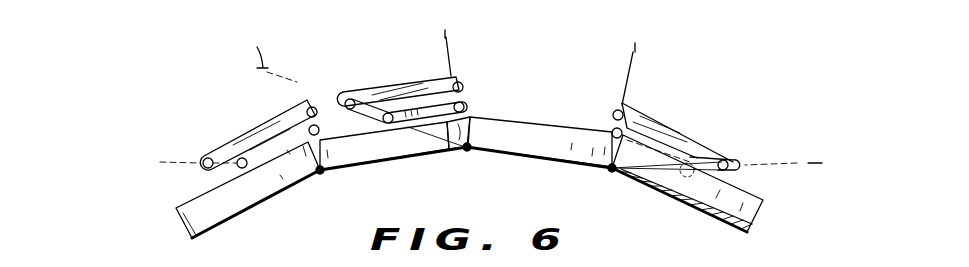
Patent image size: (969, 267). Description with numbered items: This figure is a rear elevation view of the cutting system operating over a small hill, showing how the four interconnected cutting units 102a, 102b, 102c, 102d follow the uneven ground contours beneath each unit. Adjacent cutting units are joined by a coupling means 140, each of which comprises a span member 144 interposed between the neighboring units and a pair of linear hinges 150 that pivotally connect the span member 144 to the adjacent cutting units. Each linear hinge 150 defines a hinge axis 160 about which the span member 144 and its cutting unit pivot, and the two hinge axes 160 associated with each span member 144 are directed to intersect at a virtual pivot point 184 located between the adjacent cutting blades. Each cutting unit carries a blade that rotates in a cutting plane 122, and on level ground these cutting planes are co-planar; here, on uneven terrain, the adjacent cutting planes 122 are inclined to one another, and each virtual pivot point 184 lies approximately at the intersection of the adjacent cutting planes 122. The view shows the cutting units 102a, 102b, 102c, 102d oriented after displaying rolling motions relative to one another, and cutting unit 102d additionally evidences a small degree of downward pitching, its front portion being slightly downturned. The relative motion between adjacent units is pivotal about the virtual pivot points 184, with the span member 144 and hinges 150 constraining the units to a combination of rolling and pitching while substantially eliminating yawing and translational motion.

The left side cutting unit 102a is at (203, 210).
The cutting unit 102b is at (362, 153).
The right middle cutting unit 102c is at (503, 122).
The cutting unit 102d is at (760, 213).
The cutting plane 122 is at (187, 240).
The coupling means 140 is at (418, 72).
The span member 144 is at (257, 133).
The linear hinge 150 is at (197, 152).
The hinge axis 160 is at (312, 100).
The virtual pivot point 184 is at (321, 174).